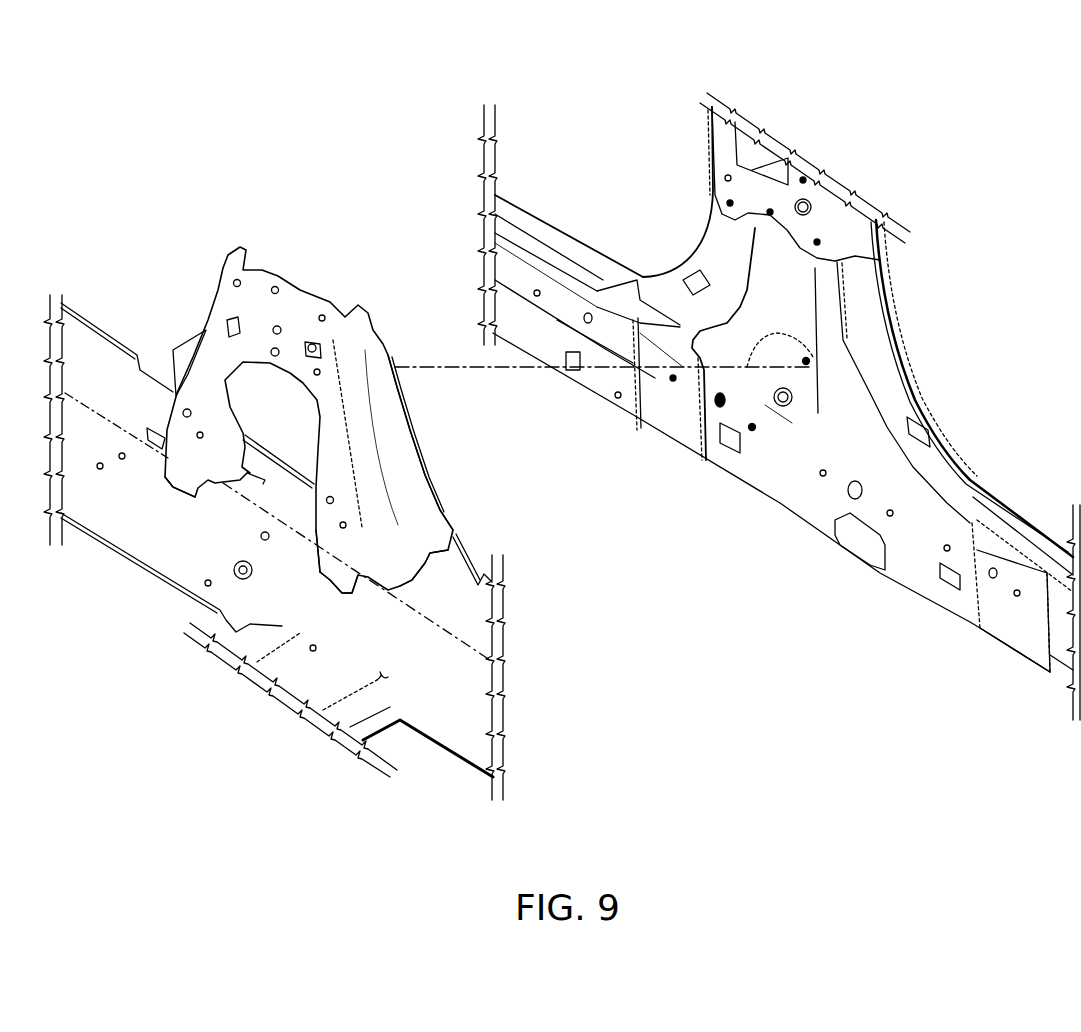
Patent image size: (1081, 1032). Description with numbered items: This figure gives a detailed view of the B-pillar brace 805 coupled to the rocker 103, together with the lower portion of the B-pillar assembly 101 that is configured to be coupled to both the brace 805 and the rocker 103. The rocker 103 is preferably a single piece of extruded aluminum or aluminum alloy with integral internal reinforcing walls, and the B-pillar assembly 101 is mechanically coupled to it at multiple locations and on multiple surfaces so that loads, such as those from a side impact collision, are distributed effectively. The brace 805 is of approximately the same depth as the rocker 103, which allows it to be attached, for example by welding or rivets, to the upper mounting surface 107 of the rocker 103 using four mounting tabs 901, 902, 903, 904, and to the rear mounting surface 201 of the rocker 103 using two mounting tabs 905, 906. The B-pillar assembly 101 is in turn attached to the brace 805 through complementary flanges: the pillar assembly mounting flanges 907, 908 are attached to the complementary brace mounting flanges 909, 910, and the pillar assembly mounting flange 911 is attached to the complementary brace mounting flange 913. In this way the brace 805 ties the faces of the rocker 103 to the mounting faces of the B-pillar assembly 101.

The B-pillar assembly 101 is at (779, 379).
The rocker 103 is at (490, 679).
The upper surface 107 is at (472, 616).
The rear surface 201 is at (135, 512).
The B-pillar brace 805 is at (233, 313).
The mounting tab 901 is at (158, 430).
The mounting tab 902 is at (250, 473).
The mounting tab 903 is at (312, 533).
The mounting tab 904 is at (402, 572).
The mounting tab 905 is at (173, 478).
The mounting tab 906 is at (335, 577).
The pillar assembly mounting flange 907 is at (670, 282).
The pillar assembly mounting flange 908 is at (887, 390).
The brace mounting flange 909 is at (192, 357).
The brace mounting flange 910 is at (403, 487).
The pillar assembly mounting flange 911 is at (807, 237).
The brace mounting flange 913 is at (283, 303).